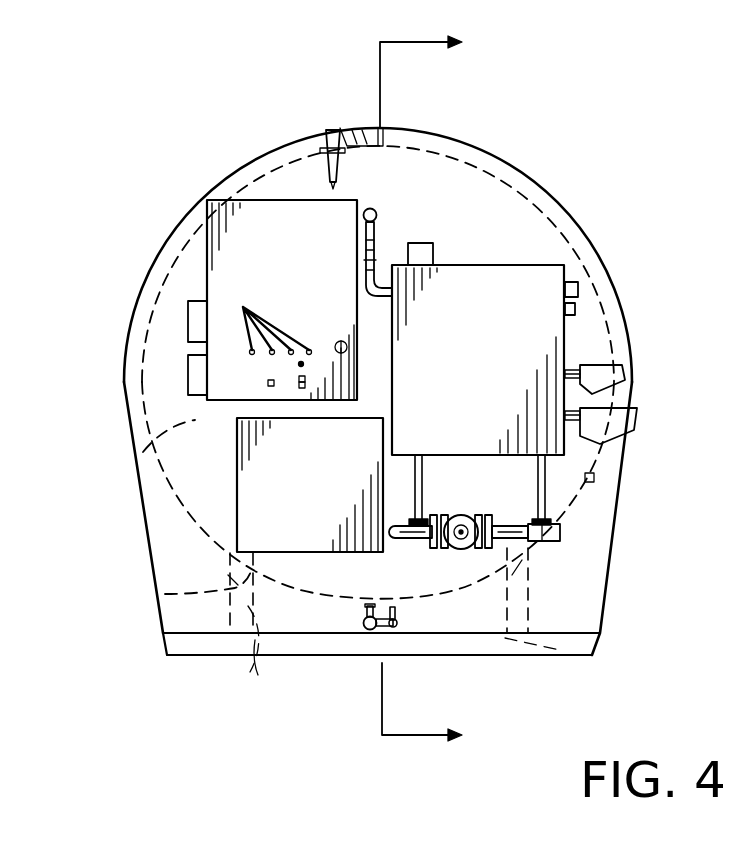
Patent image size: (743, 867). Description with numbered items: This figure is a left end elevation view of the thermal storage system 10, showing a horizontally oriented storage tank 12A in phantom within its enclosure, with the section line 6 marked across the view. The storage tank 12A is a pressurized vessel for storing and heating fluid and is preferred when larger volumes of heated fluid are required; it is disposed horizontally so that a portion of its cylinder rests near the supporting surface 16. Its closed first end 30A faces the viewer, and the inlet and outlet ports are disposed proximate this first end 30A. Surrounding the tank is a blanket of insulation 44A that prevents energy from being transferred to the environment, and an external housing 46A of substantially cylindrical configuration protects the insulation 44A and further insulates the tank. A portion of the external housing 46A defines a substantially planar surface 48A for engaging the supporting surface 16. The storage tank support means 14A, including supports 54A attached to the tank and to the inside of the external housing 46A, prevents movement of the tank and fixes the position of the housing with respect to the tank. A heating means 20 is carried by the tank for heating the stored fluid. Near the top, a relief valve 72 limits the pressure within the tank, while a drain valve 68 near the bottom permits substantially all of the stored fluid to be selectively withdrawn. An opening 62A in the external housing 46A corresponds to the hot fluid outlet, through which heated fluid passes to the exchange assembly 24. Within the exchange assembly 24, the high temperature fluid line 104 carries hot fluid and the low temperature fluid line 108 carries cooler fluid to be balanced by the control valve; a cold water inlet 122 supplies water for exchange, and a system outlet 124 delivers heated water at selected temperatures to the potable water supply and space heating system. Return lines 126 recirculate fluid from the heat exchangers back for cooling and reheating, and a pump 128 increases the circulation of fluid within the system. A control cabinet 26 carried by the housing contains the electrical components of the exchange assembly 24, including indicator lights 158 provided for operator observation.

The section line 6- 6 is at (421, 388).
The thermal storage system 10 is at (532, 128).
The storage tank 12A is at (458, 137).
The storage tank support means 14A is at (165, 594).
The supporting surface 16 is at (573, 652).
The heating means 20 is at (245, 505).
The exchange assembly 24 is at (462, 359).
The control cabinet 26 is at (270, 279).
The first end 30A is at (146, 455).
The insulation 44A is at (595, 181).
The external housing 46A is at (572, 208).
The planar surface 48A is at (430, 656).
The supports 54A is at (252, 668).
The opening 62A is at (376, 213).
The drain valve 68 is at (366, 628).
The relief valve 72 is at (330, 128).
The high temperature fluid line 104 is at (376, 238).
The low temperature fluid line 108 is at (416, 482).
The cold water inlet 122 is at (625, 367).
The system outlet 124 is at (578, 288).
The return lines 126 is at (548, 473).
The pump 128 is at (462, 543).
The indicator lights 158 is at (261, 319).